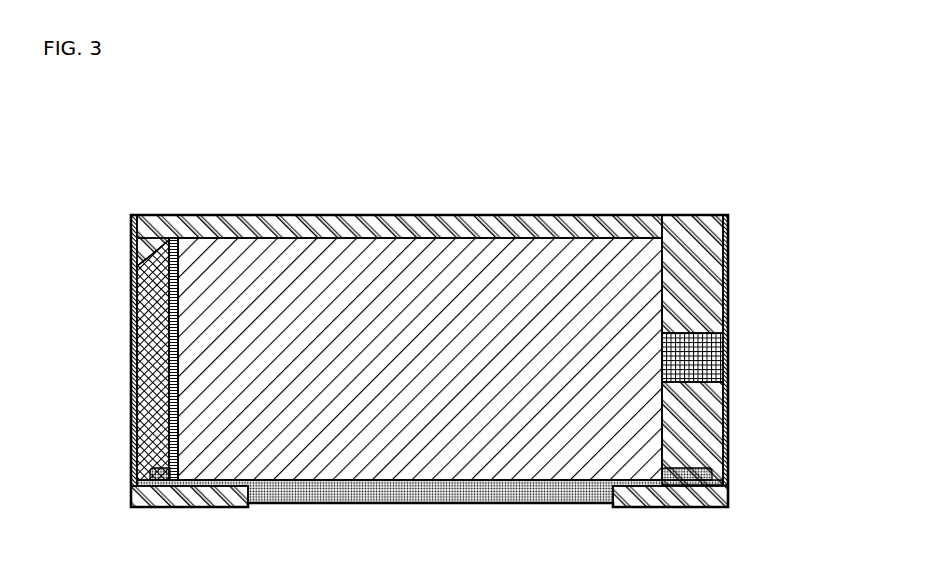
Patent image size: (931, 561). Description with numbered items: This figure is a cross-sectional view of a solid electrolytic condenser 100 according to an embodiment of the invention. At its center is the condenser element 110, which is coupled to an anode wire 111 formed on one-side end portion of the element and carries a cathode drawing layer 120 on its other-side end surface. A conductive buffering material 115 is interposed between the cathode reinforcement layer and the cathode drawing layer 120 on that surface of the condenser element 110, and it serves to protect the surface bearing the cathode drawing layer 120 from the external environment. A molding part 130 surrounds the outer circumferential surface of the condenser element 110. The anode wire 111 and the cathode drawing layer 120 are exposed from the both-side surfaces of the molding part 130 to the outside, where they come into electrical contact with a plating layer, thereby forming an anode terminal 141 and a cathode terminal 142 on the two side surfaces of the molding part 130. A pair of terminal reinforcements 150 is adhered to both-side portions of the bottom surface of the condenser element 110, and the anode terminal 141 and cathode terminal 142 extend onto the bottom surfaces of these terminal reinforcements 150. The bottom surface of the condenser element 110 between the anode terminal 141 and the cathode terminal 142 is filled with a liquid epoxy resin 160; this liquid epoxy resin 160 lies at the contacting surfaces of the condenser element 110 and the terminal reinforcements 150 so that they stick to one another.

The solid electrolytic condenser 100 is at (690, 145).
The condenser element 110 is at (565, 250).
The anode wire 111 is at (710, 356).
The conductive buffering material 115 is at (177, 426).
The cathode drawing layer 120 is at (137, 375).
The molding part 130 is at (434, 230).
The anode terminal 141 is at (727, 262).
The cathode terminal 142 is at (131, 272).
The terminal reinforcements 150 is at (189, 500).
The liquid epoxy resin 160 is at (432, 500).